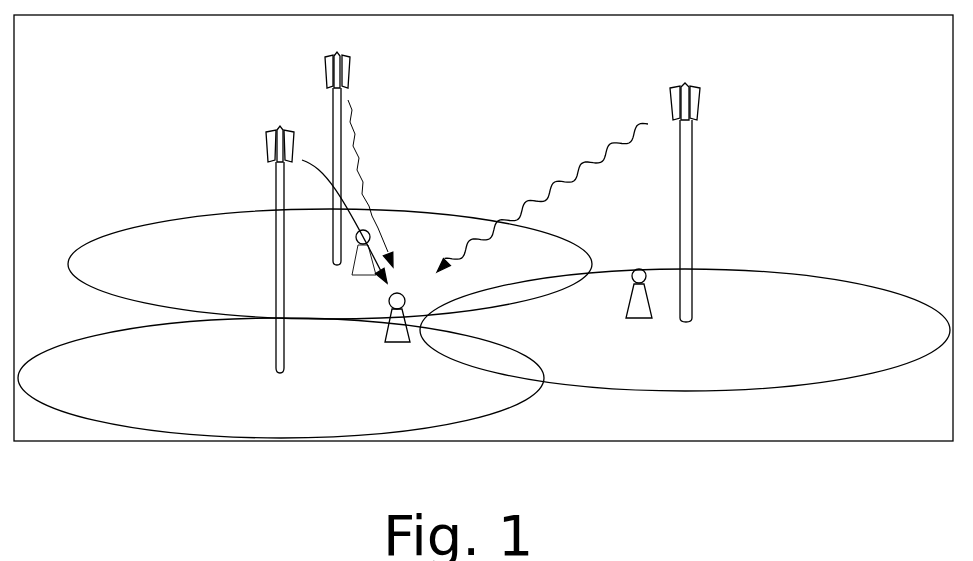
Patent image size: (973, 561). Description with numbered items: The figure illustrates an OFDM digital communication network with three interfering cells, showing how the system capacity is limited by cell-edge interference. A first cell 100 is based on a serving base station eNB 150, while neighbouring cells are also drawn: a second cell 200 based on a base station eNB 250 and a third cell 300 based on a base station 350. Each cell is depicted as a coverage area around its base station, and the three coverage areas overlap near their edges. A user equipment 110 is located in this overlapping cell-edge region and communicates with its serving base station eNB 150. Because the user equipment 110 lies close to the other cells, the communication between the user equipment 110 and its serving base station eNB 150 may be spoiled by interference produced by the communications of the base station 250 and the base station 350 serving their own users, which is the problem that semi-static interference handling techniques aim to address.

The first cell 100 is at (100, 390).
The second cell 200 is at (148, 286).
The third cell 300 is at (915, 336).
The serving base station eNB 150 is at (268, 140).
The base station eNB 250 is at (325, 57).
The base station 350 is at (693, 118).
The user equipment 110 is at (386, 330).